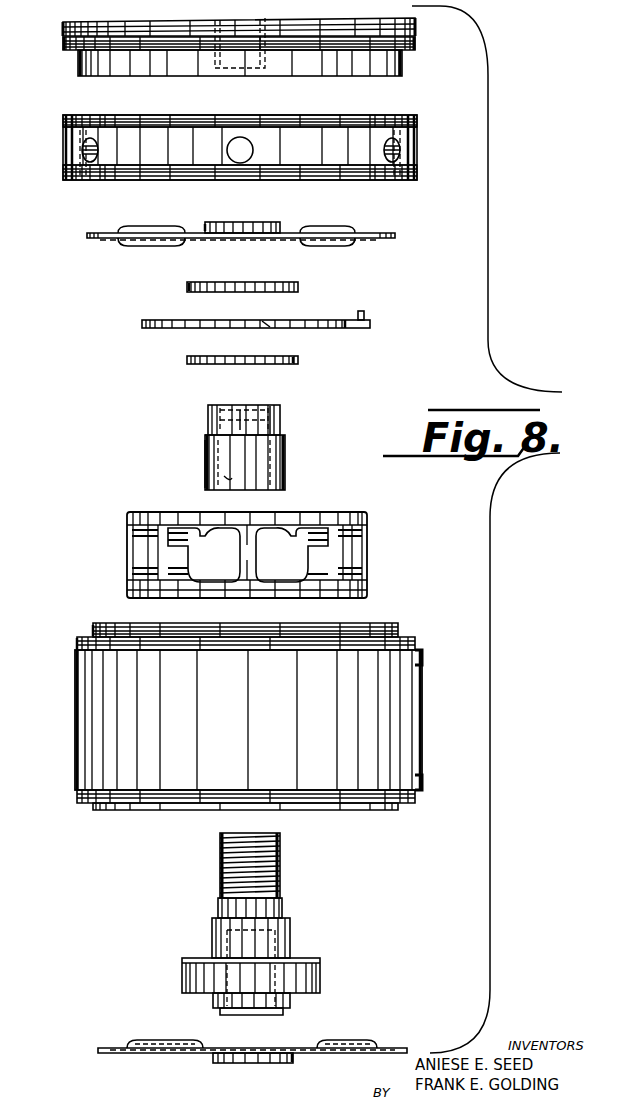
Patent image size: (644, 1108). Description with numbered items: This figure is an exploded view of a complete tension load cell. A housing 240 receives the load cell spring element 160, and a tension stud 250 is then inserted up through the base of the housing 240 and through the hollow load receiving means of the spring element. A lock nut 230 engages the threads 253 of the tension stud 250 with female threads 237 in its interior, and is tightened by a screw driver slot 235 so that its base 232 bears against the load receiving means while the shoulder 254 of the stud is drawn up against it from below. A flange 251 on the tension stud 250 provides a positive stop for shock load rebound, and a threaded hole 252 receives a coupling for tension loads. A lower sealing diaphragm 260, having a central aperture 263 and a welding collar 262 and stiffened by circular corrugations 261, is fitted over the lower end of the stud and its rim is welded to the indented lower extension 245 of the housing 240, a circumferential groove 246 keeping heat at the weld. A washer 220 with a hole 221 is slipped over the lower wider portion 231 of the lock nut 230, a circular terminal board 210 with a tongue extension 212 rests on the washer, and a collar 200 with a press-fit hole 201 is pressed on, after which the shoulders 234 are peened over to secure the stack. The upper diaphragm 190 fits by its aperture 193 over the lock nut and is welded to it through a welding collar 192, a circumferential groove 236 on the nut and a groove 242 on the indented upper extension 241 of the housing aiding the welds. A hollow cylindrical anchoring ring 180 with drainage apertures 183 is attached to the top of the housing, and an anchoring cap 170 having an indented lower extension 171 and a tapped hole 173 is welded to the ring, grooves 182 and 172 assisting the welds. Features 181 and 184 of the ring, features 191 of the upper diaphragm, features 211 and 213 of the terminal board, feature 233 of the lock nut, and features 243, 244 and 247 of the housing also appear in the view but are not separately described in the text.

The load cell spring element 160 is at (370, 538).
The anchoring cap 170 is at (352, 21).
The indented lower extension 171 is at (403, 65).
The groove 172 is at (408, 42).
The tapped hole 173 is at (260, 20).
The anchoring ring 180 is at (422, 148).
The ring bores 181 is at (86, 130).
The groove 182 is at (415, 122).
The apertures 183 is at (94, 162).
The ring lower rim 184 is at (415, 170).
The upper diaphragm 190 is at (378, 229).
The plate tabs 191 is at (180, 246).
The welding collar 192 is at (205, 224).
The aperture 193 is at (268, 222).
The collar 200 is at (283, 281).
The hole 201 is at (204, 291).
The circular terminal board 210 is at (308, 311).
The contact plate notch 211 is at (264, 328).
The tongue extension 212 is at (355, 328).
The contact lug 213 is at (364, 312).
The washer 220 is at (192, 363).
The hole 221 is at (280, 365).
The lock nut 230 is at (290, 456).
The lower portion 231 is at (207, 462).
The base 232 is at (278, 490).
The sleeve upper portion 233 is at (208, 416).
The shoulders 234 is at (205, 436).
The screw driver slot 235 is at (240, 404).
The circumferential groove 236 is at (274, 406).
The female threads 237 is at (228, 490).
The housing 240 is at (425, 755).
The indented upper extension 241 is at (416, 611).
The circumferential groove 242 is at (398, 634).
The casing flange edge 243 is at (80, 639).
The casing flange lip 244 is at (78, 648).
The indented lower extension 245 is at (398, 806).
The circumferential groove 246 is at (413, 798).
The casing side wall 247 is at (417, 716).
The tension stud 250 is at (292, 933).
The flange 251 is at (182, 977).
The threaded hole 252 is at (268, 1012).
The threads 253 is at (280, 866).
The shoulder 254 is at (284, 910).
The lower sealing diaphragm 260 is at (386, 1047).
The circular corrugations 261 is at (193, 1040).
The welding collar 262 is at (296, 1064).
The aperture 263 is at (222, 1064).